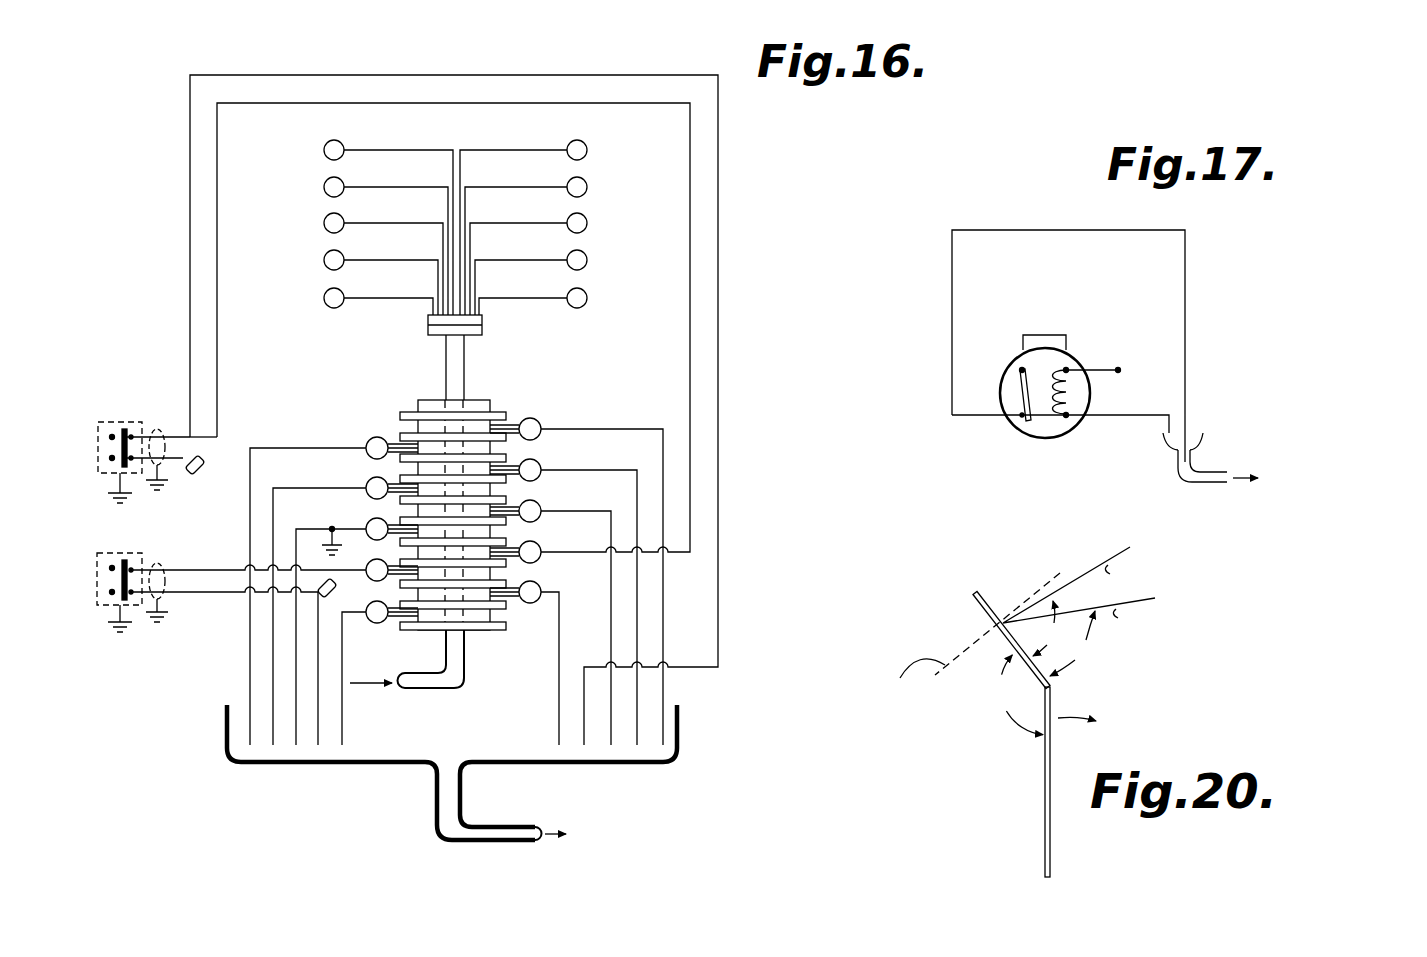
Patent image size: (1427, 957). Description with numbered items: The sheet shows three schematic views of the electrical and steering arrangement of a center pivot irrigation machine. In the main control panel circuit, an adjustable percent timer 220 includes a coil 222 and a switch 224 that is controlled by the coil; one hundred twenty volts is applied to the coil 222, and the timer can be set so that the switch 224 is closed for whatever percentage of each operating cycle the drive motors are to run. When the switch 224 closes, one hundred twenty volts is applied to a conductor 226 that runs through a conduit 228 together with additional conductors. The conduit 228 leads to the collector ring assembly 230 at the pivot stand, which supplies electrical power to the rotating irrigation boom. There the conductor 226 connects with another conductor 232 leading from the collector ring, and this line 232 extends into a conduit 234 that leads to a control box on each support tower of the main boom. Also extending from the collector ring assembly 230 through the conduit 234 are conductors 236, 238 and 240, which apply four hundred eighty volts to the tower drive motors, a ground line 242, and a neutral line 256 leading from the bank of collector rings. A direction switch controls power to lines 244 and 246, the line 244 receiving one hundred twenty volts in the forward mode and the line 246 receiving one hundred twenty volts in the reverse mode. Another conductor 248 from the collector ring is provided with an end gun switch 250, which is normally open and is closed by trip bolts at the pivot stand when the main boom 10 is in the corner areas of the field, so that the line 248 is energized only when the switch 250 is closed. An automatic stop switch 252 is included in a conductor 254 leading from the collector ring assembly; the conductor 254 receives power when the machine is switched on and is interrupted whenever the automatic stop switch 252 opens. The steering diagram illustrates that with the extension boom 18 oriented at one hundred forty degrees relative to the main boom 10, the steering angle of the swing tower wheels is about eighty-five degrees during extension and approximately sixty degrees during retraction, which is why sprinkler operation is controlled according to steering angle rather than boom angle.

In FIG. 20, the main boom 10 is at (1043, 860).
In FIG. 20, the extension boom 18 is at (990, 623).
In FIG. 17, the percent timer 220 is at (1076, 357).
In FIG. 17, the coil 222 is at (1072, 408).
In FIG. 17, the switch 224 is at (1019, 370).
In FIG. 17, the conductor 226 is at (1186, 318).
In FIG. 16, the conduit 228 is at (465, 676).
In FIG. 17, the conduit 228 is at (1215, 485).
In FIG. 16, the collector ring assembly 230 is at (496, 402).
In FIG. 16, the conductor 232 is at (559, 645).
In FIG. 16, the conduit 234 is at (477, 827).
In FIG. 16, the conductor 236 is at (583, 432).
In FIG. 16, the conductor 238 is at (583, 474).
In FIG. 16, the conductor 240 is at (303, 448).
In FIG. 16, the ground line 242 is at (317, 529).
In FIG. 16, the line 244 is at (583, 515).
In FIG. 16, the line 246 is at (308, 488).
In FIG. 16, the conductor 248 is at (222, 568).
In FIG. 16, the end gun switch 250 is at (107, 570).
In FIG. 16, the automatic stop switch 252 is at (107, 448).
In FIG. 16, the conductor 254 is at (190, 358).
In FIG. 16, the neutral line 256 is at (342, 638).